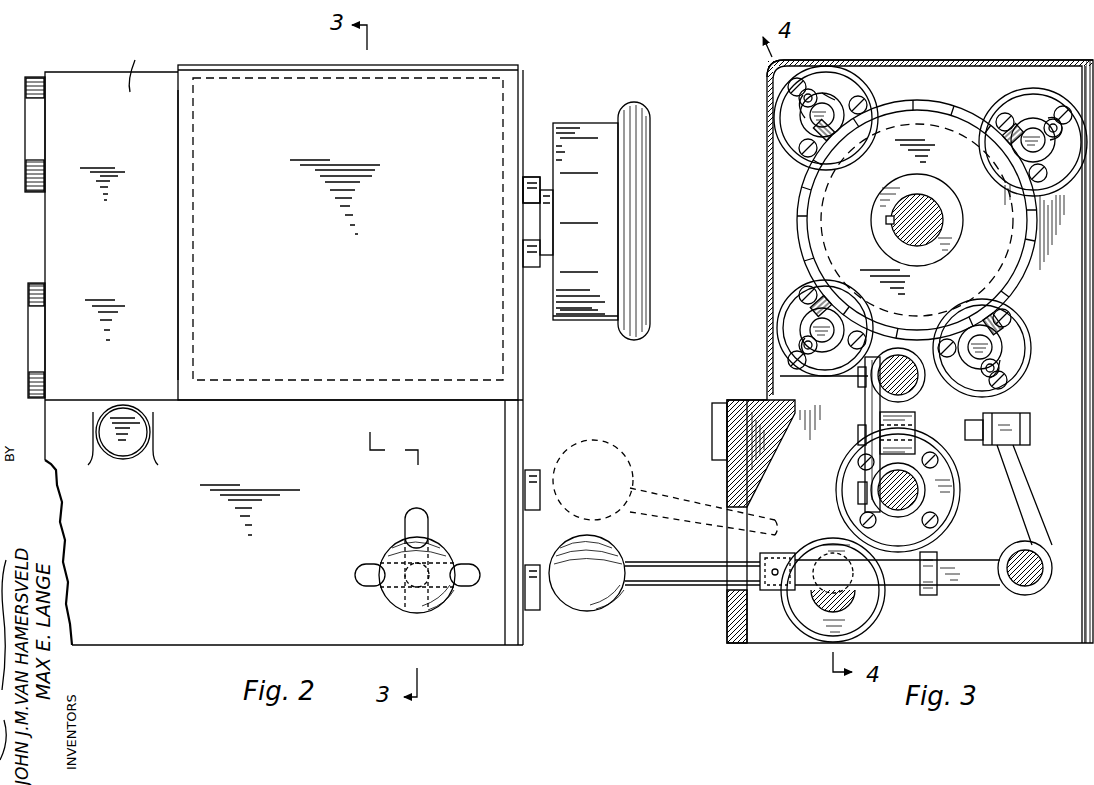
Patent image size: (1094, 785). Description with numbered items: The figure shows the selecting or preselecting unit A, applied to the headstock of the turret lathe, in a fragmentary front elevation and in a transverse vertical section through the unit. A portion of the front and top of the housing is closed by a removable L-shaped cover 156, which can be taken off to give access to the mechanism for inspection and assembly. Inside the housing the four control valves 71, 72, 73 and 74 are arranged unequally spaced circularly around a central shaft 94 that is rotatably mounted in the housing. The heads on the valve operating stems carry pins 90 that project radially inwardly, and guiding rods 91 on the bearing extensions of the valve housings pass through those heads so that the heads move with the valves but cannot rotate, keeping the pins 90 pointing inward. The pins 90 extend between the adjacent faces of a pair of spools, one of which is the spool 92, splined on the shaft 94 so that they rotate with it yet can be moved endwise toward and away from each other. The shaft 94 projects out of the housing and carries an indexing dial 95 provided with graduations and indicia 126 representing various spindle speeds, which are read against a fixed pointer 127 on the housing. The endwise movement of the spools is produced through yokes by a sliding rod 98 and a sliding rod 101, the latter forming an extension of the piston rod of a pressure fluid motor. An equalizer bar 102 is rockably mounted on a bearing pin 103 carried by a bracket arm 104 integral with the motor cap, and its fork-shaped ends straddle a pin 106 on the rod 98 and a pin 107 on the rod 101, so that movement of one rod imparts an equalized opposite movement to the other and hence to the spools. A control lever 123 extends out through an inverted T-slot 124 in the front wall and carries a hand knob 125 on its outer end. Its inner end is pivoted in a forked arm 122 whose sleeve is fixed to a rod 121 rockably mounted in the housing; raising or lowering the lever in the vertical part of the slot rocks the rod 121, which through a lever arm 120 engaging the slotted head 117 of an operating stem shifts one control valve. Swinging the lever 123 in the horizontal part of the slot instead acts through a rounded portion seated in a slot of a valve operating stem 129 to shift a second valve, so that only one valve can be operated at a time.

In FIG. 2, the unit A is at (135, 62).
In FIG. 2, the removable L-shaped cover 156 is at (178, 283).
In FIG. 3, the removable L-shaped cover 156 is at (767, 228).
In FIG. 2, the fixed pointer 127 is at (530, 224).
In FIG. 2, the graduations and indicia 126 is at (598, 138).
In FIG. 2, the indexing dial 95 is at (597, 322).
In FIG. 2, the inverted T-slot 124 is at (426, 526).
In FIG. 3, the inverted T-slot 124 is at (735, 545).
In FIG. 2, the hand knob 125 is at (400, 598).
In FIG. 3, the hand knob 125 is at (588, 606).
In FIG. 3, the spool 92 is at (948, 116).
In FIG. 3, the shaft 94 is at (925, 208).
In FIG. 3, the pins 90 is at (845, 142).
In FIG. 3, the guiding rods 91 is at (810, 94).
In FIG. 3, the control valve 72 is at (825, 112).
In FIG. 3, the control valve 71 is at (1033, 138).
In FIG. 3, the control valve 73 is at (812, 330).
In FIG. 3, the control valve 74 is at (992, 347).
In FIG. 3, the sliding rod 98 is at (908, 382).
In FIG. 3, the sliding rod 101 is at (915, 502).
In FIG. 3, the equalizer bar 102 is at (865, 413).
In FIG. 3, the bearing pin 103 is at (858, 433).
In FIG. 3, the bracket arm 104 is at (916, 421).
In FIG. 3, the pin 106 is at (860, 380).
In FIG. 3, the pin 107 is at (860, 492).
In FIG. 3, the head 117 is at (1027, 420).
In FIG. 3, the lever arm 120 is at (1022, 495).
In FIG. 3, the rod 121 is at (1018, 590).
In FIG. 3, the forked arm 122 is at (938, 556).
In FIG. 3, the control lever 123 is at (905, 588).
In FIG. 3, the valve operating stem 129 is at (820, 600).